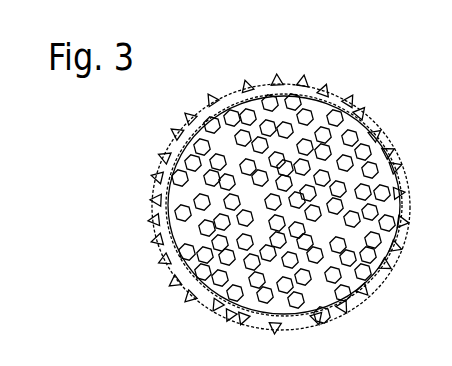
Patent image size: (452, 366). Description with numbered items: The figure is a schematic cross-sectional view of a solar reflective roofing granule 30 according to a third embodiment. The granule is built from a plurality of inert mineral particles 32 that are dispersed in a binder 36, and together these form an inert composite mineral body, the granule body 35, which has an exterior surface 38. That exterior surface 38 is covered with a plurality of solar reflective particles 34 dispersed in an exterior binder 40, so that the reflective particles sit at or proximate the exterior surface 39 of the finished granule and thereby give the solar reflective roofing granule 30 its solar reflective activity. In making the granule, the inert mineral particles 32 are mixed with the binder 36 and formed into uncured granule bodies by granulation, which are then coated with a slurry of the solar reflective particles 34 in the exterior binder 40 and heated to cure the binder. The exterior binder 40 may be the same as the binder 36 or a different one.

The solar reflective roofing granule 30 is at (123, 197).
The inert mineral particles 32 is at (285, 316).
The solar reflective particles 34 is at (383, 265).
The granule body 35 is at (359, 148).
The binder 36 is at (222, 137).
The exterior surface 38 is at (322, 99).
The exterior surface 39 is at (258, 85).
The exterior binder 40 is at (240, 97).